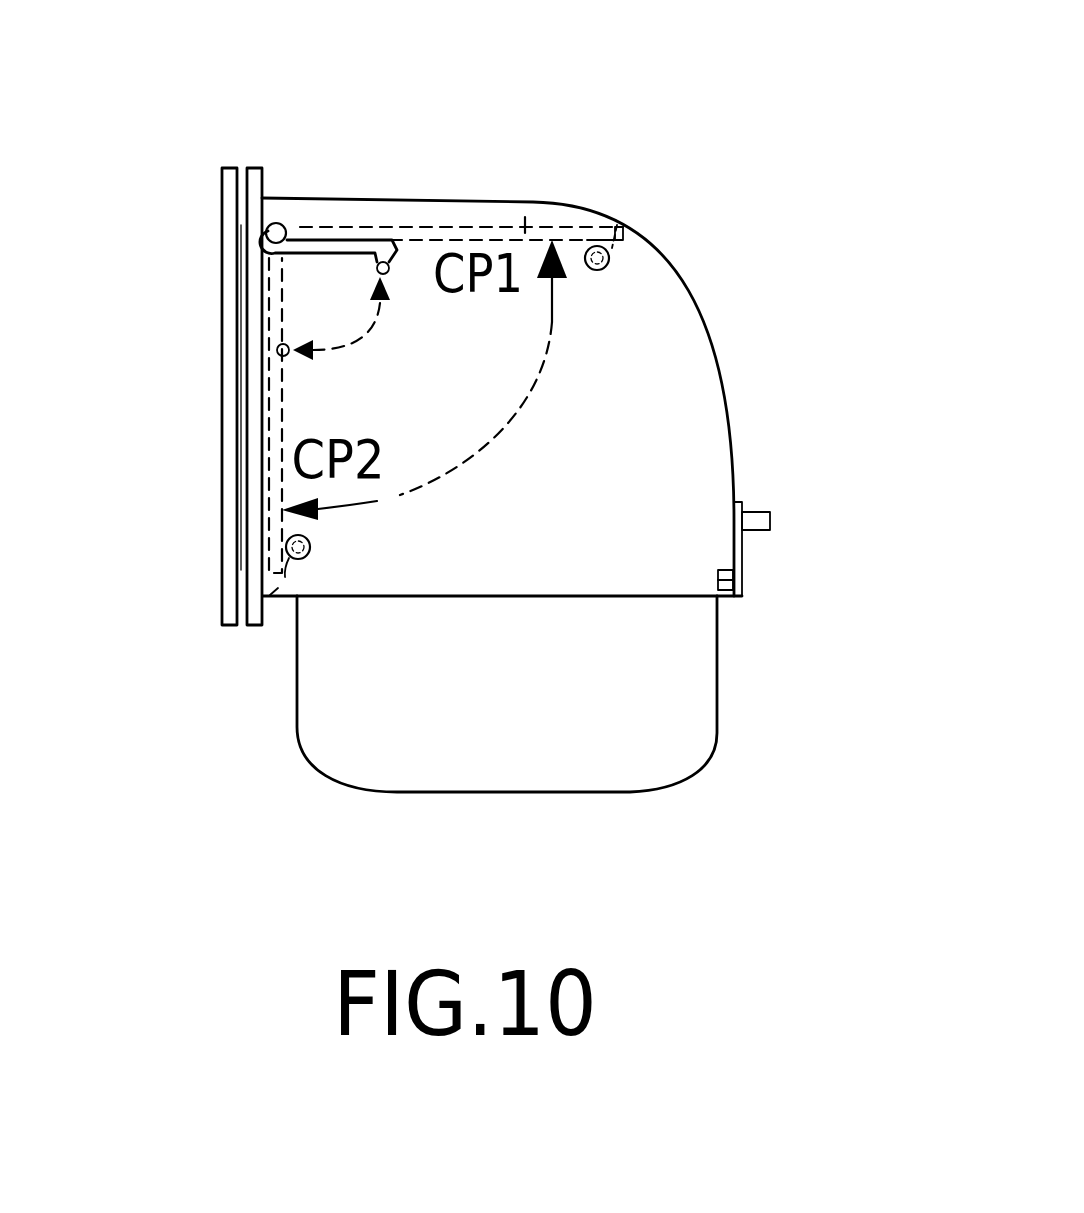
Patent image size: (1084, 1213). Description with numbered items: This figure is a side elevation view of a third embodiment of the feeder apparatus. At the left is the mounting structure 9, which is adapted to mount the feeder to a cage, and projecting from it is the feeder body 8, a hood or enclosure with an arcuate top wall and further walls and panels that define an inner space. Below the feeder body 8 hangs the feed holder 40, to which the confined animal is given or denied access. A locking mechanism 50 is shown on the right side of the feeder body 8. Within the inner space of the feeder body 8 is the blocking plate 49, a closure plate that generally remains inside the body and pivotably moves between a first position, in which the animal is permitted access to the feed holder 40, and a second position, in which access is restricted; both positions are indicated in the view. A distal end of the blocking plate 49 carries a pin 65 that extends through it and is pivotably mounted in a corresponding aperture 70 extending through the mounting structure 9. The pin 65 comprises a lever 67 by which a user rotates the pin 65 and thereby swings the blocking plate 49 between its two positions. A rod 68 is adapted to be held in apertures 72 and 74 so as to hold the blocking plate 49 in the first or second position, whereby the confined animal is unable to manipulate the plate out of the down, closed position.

The feeder body 8 is at (753, 410).
The mounting structure 9 is at (195, 568).
The feed holder 40 is at (680, 780).
The blocking plate 49 is at (523, 212).
The locking mechanism 50 is at (798, 518).
The pin 65 is at (290, 227).
The lever 67 is at (345, 240).
The rod 68 is at (617, 225).
The aperture 70 is at (270, 220).
The aperture 72 is at (608, 270).
The aperture 74 is at (307, 560).